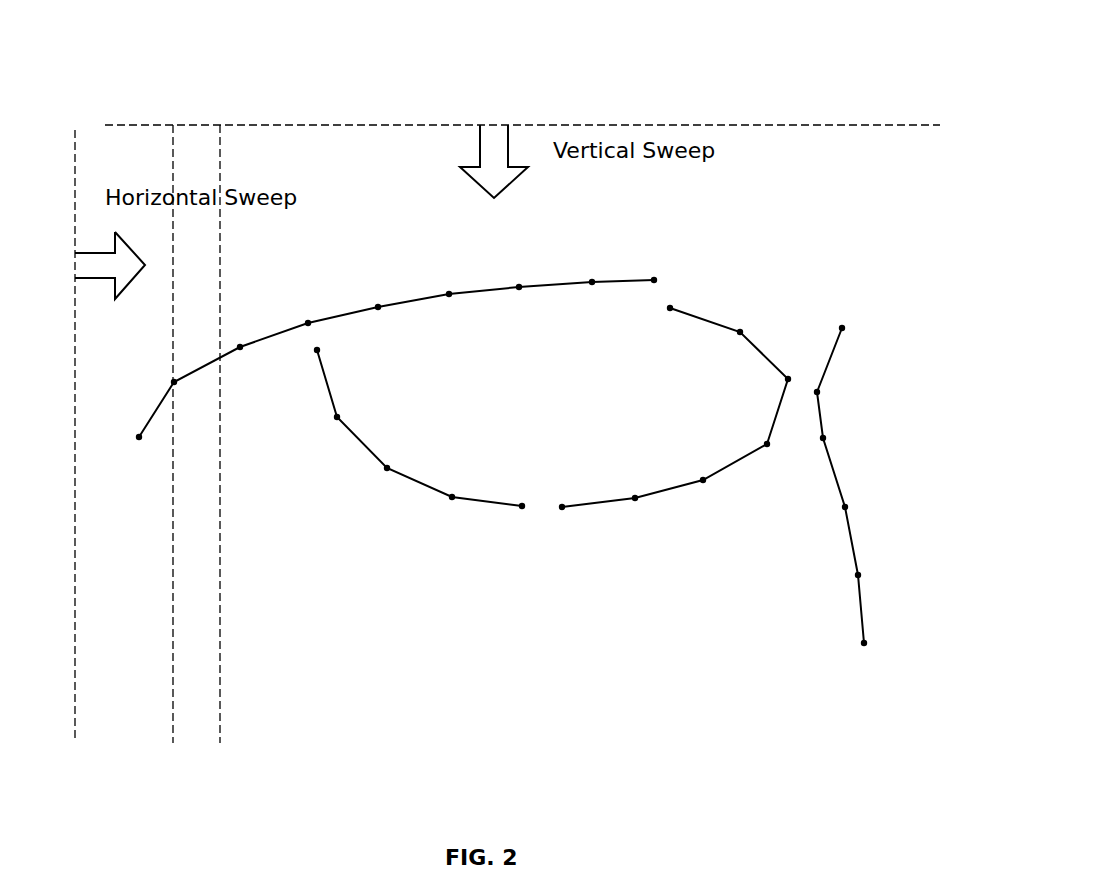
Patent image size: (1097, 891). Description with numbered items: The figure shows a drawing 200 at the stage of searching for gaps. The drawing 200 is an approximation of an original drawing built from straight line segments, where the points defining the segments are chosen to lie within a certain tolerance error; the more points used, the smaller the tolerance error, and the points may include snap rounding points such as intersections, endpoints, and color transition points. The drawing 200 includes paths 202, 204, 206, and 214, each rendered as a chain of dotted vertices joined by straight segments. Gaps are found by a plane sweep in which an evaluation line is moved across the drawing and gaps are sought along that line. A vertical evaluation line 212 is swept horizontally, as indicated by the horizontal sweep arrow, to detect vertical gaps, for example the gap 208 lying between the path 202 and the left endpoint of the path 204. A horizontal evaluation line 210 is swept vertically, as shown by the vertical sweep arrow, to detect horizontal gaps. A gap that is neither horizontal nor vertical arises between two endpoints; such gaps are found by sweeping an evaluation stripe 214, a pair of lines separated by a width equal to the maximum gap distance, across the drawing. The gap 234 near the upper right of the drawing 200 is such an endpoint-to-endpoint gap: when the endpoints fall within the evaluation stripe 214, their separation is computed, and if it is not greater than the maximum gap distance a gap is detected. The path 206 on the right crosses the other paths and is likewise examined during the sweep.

The drawing 200 is at (836, 66).
The path 202 is at (620, 280).
The path 204 is at (492, 504).
The path 206 is at (835, 348).
The gap 208 is at (314, 335).
The horizontal evaluation line 210 is at (897, 126).
The vertical evaluation line 212 is at (75, 588).
The evaluation stripe 214 is at (173, 719).
The gap 234 is at (663, 294).